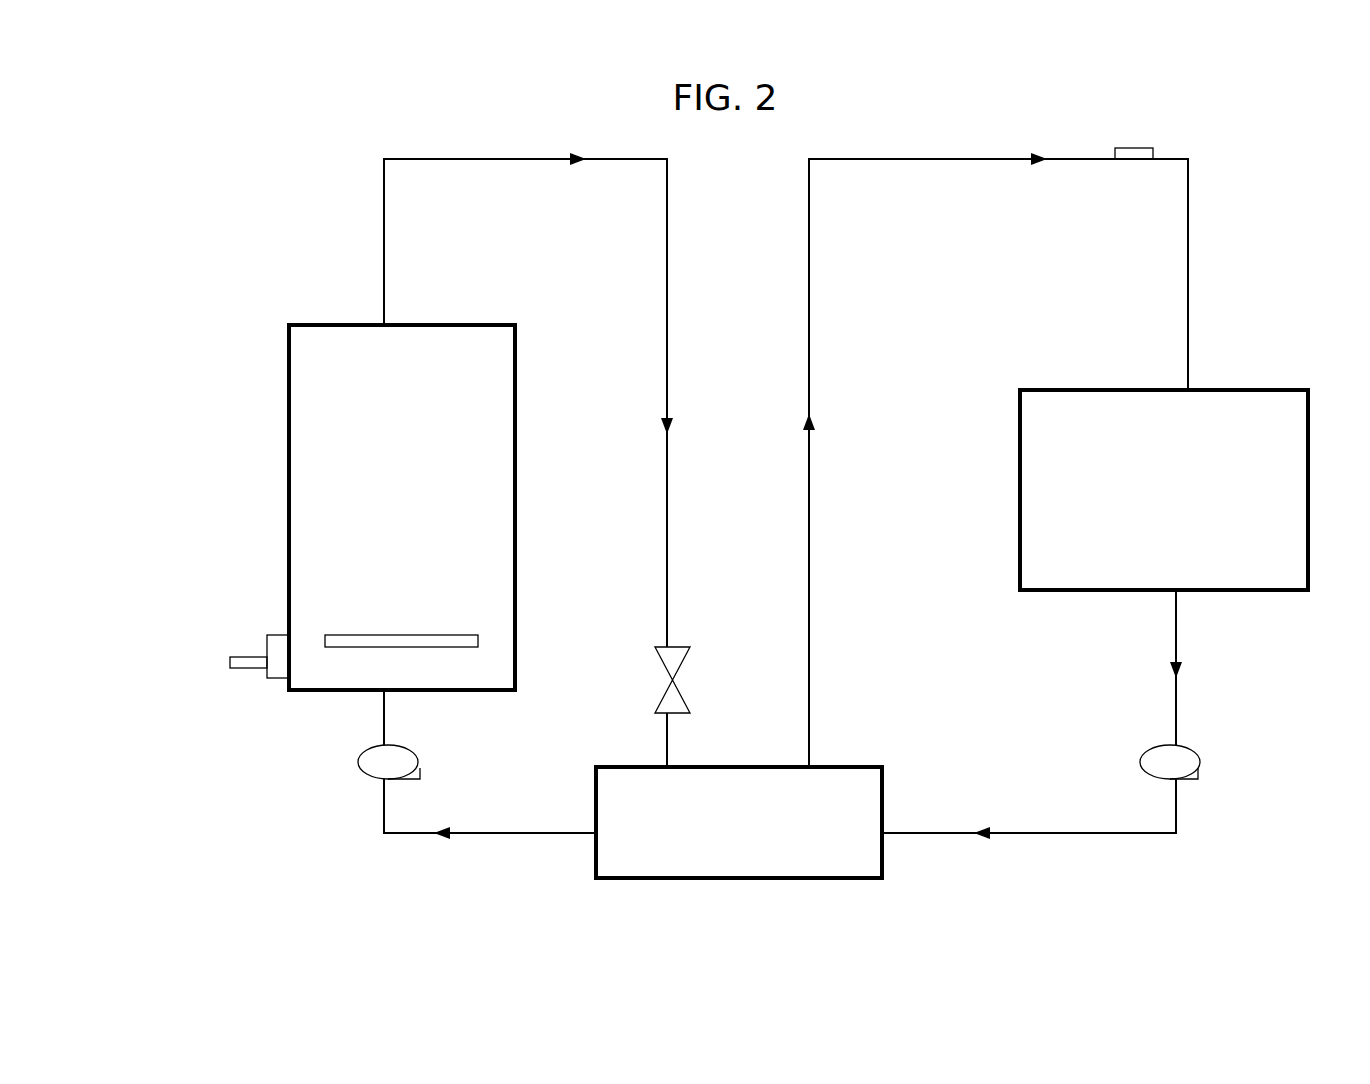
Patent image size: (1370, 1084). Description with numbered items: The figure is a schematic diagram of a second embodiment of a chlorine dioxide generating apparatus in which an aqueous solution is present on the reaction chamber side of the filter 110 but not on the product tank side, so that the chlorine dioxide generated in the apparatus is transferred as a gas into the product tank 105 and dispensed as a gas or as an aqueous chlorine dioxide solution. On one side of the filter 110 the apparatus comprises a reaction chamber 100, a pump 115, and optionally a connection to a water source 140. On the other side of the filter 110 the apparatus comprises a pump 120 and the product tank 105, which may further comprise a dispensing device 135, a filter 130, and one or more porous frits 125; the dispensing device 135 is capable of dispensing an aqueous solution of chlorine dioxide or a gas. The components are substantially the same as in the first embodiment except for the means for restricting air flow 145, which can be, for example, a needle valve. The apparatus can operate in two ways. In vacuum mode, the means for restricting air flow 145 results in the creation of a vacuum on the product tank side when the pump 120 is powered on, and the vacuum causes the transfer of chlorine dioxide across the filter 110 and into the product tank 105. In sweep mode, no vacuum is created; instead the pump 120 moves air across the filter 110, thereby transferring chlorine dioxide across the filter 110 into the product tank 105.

The reaction chamber 100 is at (1164, 490).
The product tank 105 is at (289, 443).
The filter 110 is at (739, 822).
The pump 115 is at (1198, 765).
The pump 120 is at (373, 768).
The porous frit 125 is at (408, 635).
The filter 130 is at (277, 682).
The dispensing device 135 is at (243, 655).
The connection to a water source 140 is at (1143, 145).
The means for restricting air flow 145 is at (679, 645).